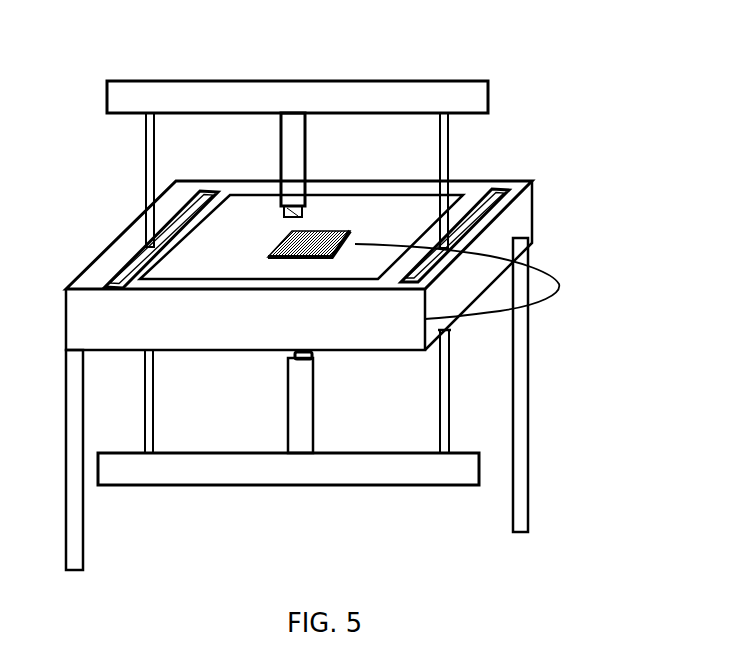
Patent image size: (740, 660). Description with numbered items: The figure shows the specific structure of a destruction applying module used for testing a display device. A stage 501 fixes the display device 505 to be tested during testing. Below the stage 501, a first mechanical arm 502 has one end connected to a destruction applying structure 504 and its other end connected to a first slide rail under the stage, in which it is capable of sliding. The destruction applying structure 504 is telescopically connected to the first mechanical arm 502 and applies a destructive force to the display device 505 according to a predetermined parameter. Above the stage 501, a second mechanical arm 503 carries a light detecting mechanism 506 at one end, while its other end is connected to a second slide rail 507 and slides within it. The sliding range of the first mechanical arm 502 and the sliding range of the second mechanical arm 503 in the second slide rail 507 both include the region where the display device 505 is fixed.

The stage 501 is at (117, 237).
The first mechanical arm 502 is at (465, 473).
The second mechanical arm 503 is at (472, 101).
The destruction applying structure 504 is at (313, 363).
The display device 505 is at (345, 234).
The light detecting mechanism 506 is at (277, 198).
The second slide rail 507 is at (193, 205).